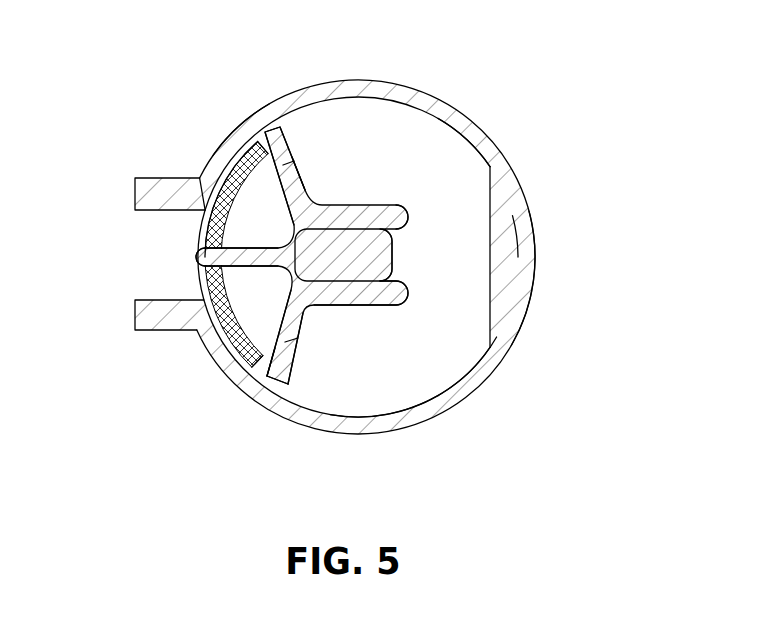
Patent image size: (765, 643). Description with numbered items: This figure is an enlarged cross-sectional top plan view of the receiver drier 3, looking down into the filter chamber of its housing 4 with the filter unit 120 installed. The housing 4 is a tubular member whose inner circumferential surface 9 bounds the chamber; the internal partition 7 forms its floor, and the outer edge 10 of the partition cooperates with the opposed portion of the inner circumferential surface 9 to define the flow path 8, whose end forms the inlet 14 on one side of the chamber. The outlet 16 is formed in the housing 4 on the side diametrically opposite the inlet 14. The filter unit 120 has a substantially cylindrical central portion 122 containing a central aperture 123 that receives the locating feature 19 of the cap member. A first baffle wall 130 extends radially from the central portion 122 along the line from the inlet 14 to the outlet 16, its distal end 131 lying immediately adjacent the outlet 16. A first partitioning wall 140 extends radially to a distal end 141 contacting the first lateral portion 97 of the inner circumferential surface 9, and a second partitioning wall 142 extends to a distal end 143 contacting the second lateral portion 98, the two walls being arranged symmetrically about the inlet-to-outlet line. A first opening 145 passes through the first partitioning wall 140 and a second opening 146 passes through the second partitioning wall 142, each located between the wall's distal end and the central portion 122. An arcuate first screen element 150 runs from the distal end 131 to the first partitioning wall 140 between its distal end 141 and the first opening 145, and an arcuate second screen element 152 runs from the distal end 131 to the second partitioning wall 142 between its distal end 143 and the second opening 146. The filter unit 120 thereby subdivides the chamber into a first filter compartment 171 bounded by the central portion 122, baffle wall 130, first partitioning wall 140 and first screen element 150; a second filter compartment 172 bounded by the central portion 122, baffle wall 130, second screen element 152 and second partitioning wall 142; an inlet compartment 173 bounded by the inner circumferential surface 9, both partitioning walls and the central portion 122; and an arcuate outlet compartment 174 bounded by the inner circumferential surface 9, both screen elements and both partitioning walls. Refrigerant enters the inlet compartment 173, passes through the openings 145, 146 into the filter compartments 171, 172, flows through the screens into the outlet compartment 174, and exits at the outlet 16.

The receiver drier 3 is at (188, 158).
The housing 4 is at (220, 147).
The internal partition 7 is at (460, 155).
The flow path 8 is at (503, 248).
The inner circumferential surface 9 is at (483, 328).
The outer edge 10 is at (500, 187).
The inlet 14 is at (506, 274).
The outlet 16 is at (145, 262).
The locating feature 19 is at (372, 240).
The first lateral portion 97 is at (408, 403).
The second lateral portion 98 is at (442, 126).
The filter unit 120 is at (408, 212).
The central portion 122 is at (355, 297).
The central aperture 123 is at (340, 232).
The first baffle wall 130 is at (230, 253).
The distal end 131 is at (200, 250).
The first partitioning wall 140 is at (291, 380).
The distal end 141 is at (272, 377).
The second partitioning wall 142 is at (289, 162).
The distal end 143 is at (280, 124).
The first opening 145 is at (293, 339).
The second opening 146 is at (300, 157).
The first screen element 150 is at (250, 372).
The second screen element 152 is at (248, 138).
The first filter compartment 171 is at (231, 318).
The second filter compartment 172 is at (243, 213).
The inlet compartment 173 is at (428, 263).
The outlet compartment 174 is at (212, 310).